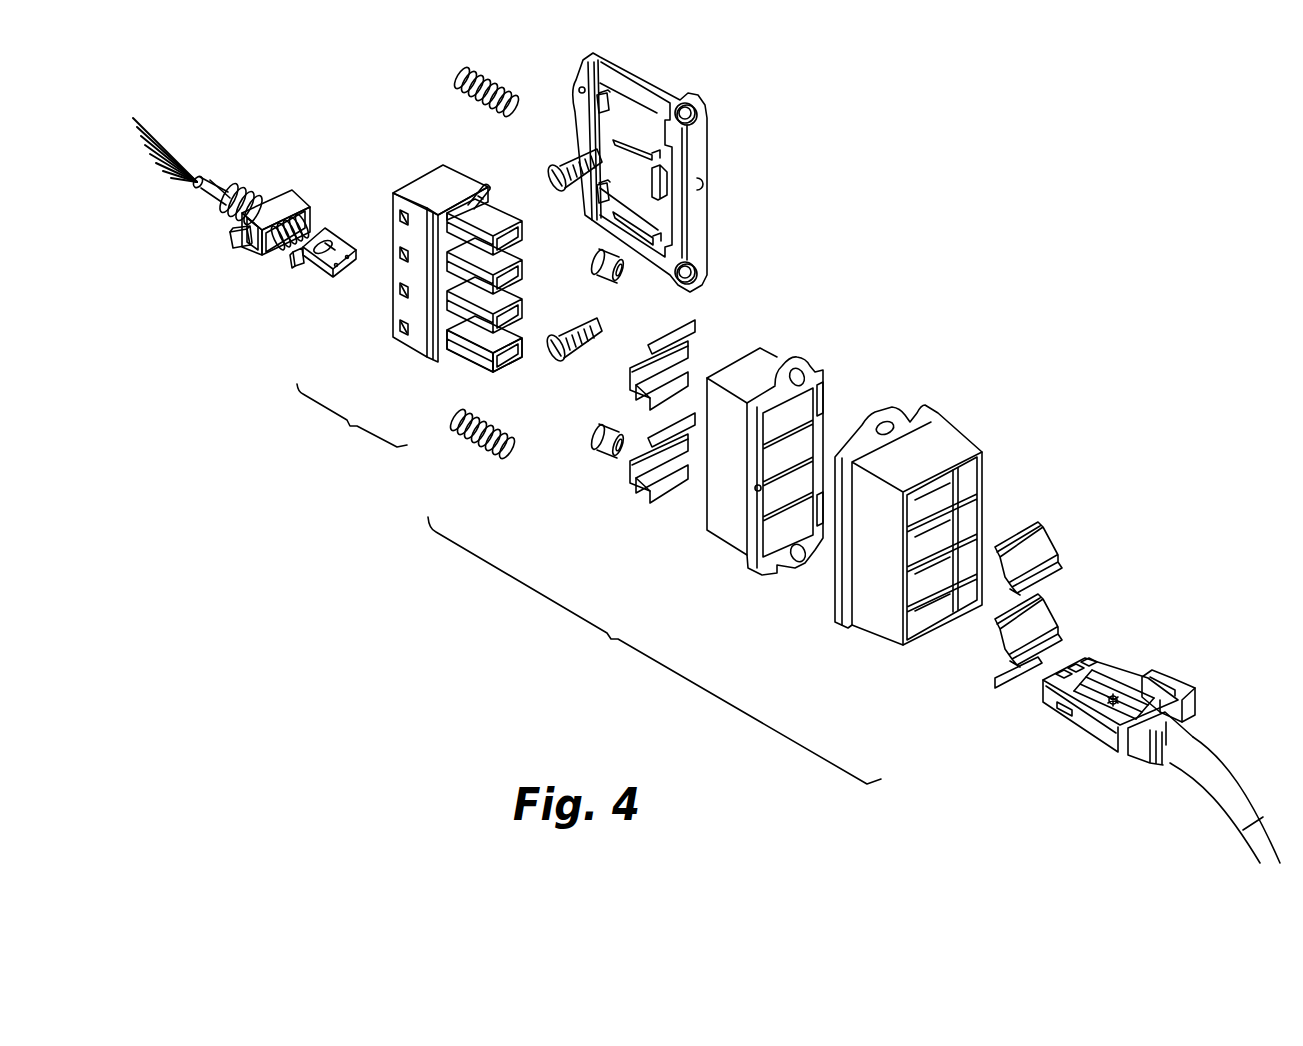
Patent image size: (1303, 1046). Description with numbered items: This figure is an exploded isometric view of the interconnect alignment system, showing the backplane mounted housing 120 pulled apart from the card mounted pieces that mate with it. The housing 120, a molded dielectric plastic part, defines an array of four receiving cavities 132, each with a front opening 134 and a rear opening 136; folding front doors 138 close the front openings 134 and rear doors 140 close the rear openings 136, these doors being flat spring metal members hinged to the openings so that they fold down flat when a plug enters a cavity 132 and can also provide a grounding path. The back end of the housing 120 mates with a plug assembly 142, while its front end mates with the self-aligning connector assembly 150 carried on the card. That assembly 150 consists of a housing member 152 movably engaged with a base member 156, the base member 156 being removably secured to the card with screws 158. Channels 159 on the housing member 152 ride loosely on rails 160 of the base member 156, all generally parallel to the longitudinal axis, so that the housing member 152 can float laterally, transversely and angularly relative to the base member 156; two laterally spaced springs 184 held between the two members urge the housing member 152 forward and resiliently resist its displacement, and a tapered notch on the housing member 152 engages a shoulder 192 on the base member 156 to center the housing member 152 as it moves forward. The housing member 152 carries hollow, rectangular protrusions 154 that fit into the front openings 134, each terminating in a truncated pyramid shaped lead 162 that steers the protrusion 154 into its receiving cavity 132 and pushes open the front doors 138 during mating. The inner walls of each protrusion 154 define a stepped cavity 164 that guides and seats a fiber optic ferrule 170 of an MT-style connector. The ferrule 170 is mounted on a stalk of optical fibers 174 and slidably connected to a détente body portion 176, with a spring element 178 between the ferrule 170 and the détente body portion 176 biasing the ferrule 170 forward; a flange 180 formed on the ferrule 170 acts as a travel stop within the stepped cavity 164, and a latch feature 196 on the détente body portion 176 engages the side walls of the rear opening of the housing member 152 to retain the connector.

The housing 120 is at (654, 650).
The receiving cavities 132 is at (722, 350).
The front opening 134 is at (693, 492).
The rear opening 136 is at (925, 497).
The front doors 138 is at (652, 461).
The rear doors 140 is at (1013, 688).
The plug assembly 142 is at (1117, 672).
The self-aligning connector assembly 150 is at (352, 419).
The housing member 152 is at (403, 349).
The hollow protrusions 154 is at (464, 362).
The base member 156 is at (690, 157).
The screws 158 is at (562, 160).
The channels 159 is at (488, 192).
The rails 160 is at (641, 137).
The truncated pyramid shaped lead 162 is at (492, 369).
The stepped cavity 164 is at (507, 370).
The fiber optic ferrule 170 is at (323, 272).
The stalk of optical fibers 174 is at (287, 215).
The détente body portion 176 is at (235, 212).
The spring element 178 is at (312, 231).
The flange 180 is at (291, 261).
The springs 184 is at (457, 80).
The shoulder 192 is at (665, 189).
The latch feature 196 is at (235, 243).